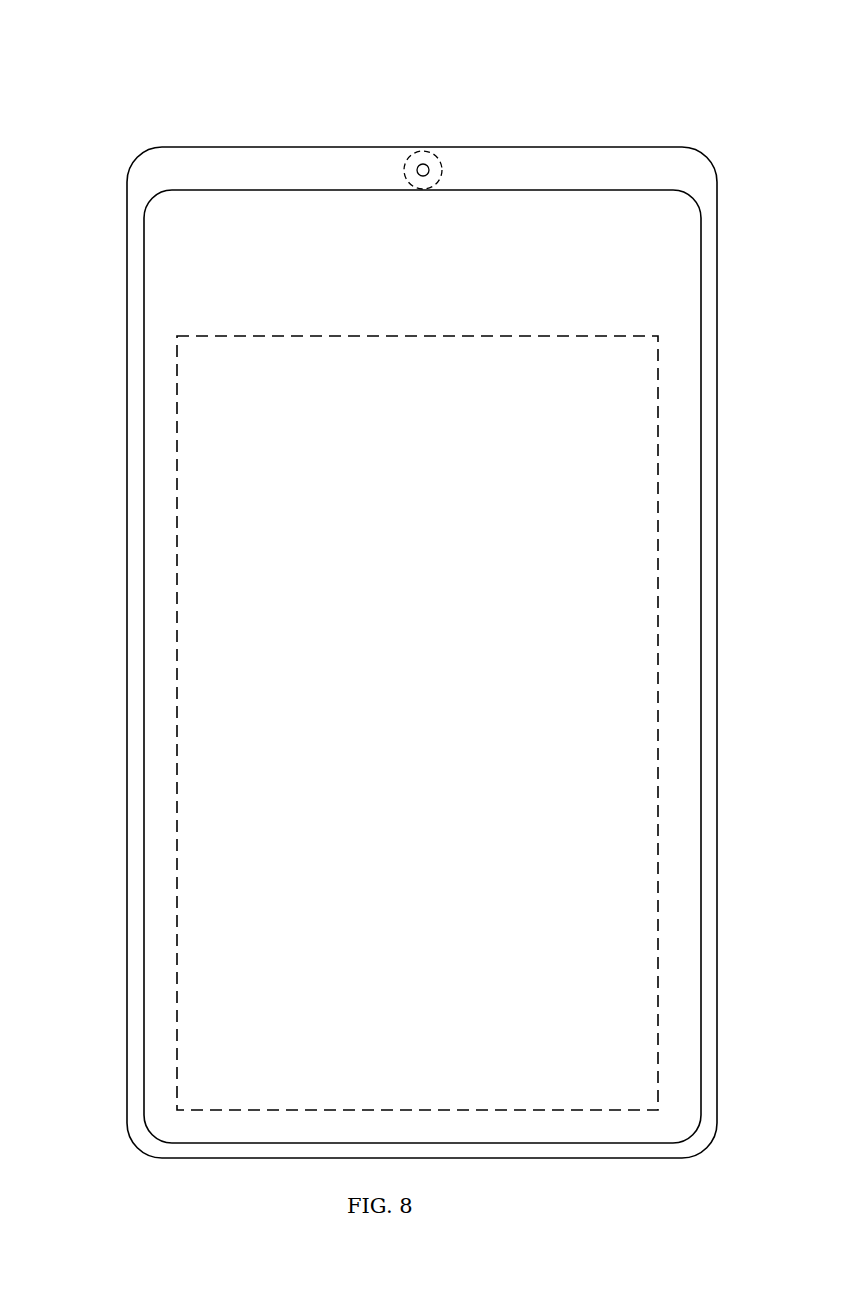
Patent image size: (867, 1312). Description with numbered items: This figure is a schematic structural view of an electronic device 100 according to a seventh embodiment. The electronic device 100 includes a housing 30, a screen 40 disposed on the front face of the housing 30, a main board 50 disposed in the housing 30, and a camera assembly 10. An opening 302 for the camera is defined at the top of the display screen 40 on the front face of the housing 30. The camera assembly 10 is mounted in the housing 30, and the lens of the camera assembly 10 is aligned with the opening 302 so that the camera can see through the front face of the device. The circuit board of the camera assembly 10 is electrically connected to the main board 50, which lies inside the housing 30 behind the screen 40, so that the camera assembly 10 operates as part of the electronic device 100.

The electronic device 100 is at (202, 78).
The housing 30 is at (143, 190).
The opening 302 is at (410, 167).
The camera assembly 10 is at (432, 150).
The screen 40 is at (165, 272).
The main board 50 is at (205, 430).